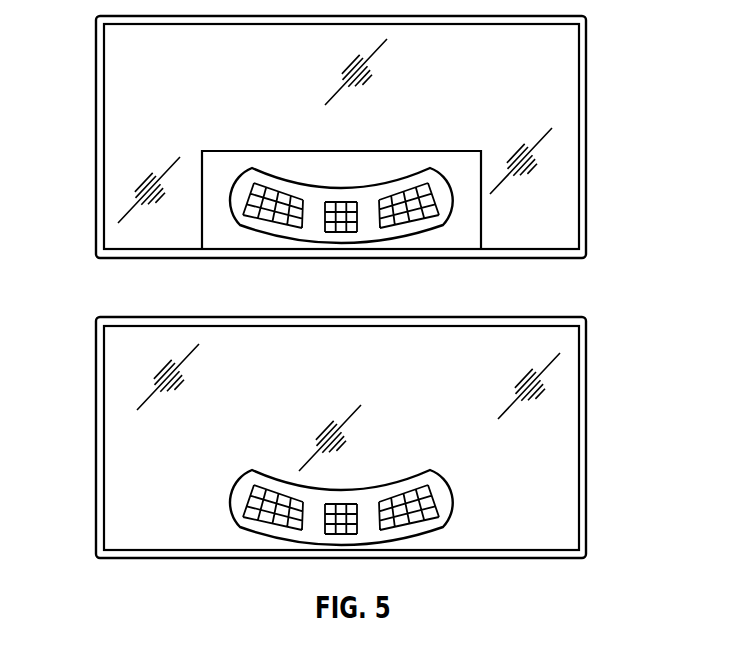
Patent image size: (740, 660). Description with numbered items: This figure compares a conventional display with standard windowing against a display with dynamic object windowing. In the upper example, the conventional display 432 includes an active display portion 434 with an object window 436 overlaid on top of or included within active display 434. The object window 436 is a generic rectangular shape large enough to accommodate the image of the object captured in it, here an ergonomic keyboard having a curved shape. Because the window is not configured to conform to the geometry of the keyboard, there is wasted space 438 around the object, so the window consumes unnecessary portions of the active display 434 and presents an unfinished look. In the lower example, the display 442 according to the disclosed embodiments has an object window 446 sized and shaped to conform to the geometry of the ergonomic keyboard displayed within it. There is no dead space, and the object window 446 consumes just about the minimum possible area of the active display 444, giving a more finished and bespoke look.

The display 432 is at (586, 60).
The active display portion 434 is at (567, 108).
The object window 436 is at (481, 210).
The wasted space 438 is at (297, 170).
The display 442 is at (586, 352).
The active display 444 is at (565, 400).
The object window 446 is at (452, 492).